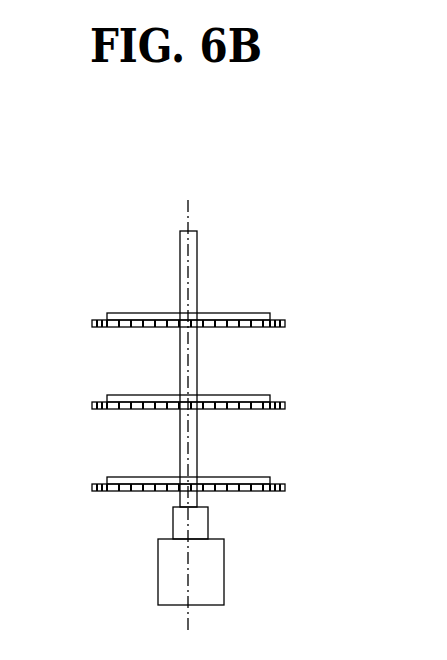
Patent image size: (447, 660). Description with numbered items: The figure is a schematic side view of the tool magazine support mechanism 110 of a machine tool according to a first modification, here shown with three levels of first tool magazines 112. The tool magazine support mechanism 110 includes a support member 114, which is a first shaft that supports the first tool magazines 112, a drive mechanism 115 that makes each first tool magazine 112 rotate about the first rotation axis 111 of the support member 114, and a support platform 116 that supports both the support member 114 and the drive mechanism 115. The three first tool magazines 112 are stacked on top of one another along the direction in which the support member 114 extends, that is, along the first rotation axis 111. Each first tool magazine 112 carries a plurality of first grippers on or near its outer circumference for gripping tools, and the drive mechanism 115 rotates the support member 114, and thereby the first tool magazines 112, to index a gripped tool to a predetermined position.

The tool magazine support mechanism 110 is at (130, 204).
The first rotation axis 111 is at (188, 206).
The first tool magazine 112 is at (238, 313).
The support member (first shaft) 114 is at (180, 293).
The drive mechanism 115 is at (187, 522).
The support platform 116 is at (212, 579).